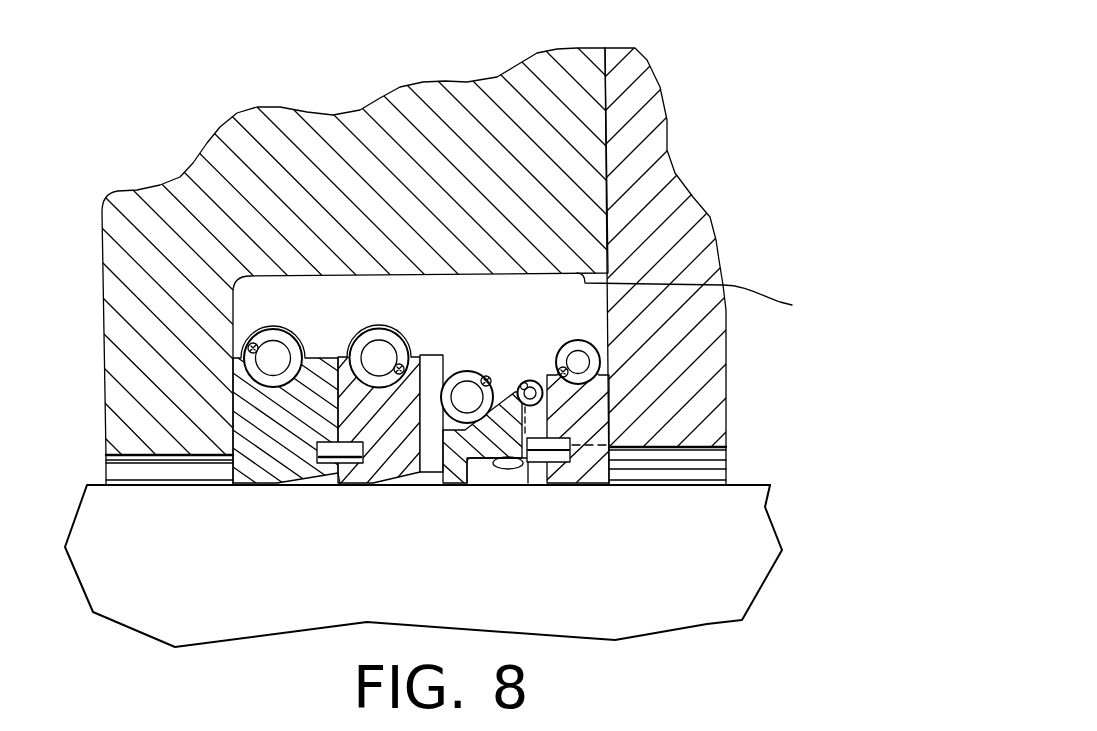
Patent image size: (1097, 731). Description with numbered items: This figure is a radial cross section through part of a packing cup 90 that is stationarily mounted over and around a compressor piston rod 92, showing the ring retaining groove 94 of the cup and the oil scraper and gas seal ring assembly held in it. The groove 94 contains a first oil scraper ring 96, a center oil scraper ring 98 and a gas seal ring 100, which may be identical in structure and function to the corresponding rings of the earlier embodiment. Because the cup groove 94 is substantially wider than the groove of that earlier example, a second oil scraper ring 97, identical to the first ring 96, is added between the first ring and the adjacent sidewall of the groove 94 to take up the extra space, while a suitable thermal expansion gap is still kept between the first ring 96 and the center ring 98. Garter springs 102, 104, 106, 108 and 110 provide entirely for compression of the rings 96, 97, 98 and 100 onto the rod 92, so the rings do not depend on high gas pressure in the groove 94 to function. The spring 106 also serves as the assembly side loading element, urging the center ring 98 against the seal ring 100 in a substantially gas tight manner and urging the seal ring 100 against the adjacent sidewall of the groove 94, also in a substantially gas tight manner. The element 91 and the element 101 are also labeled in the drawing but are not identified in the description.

The packing cup 90 is at (578, 70).
The shim layers 91 is at (170, 457).
The compressor piston rod 92 is at (747, 558).
The groove 94 is at (698, 295).
The first oil scraper ring 96 is at (380, 485).
The second oil scraper ring 97 is at (277, 485).
The center oil scraper ring 98 is at (477, 485).
The gas seal ring 100 is at (578, 485).
The seal gap 101 is at (540, 484).
The garter spring 102 is at (273, 331).
The garter spring 104 is at (382, 331).
The garter spring (assembly side loading spring) 106 is at (470, 372).
The garter spring 108 is at (530, 380).
The garter spring 110 is at (580, 343).